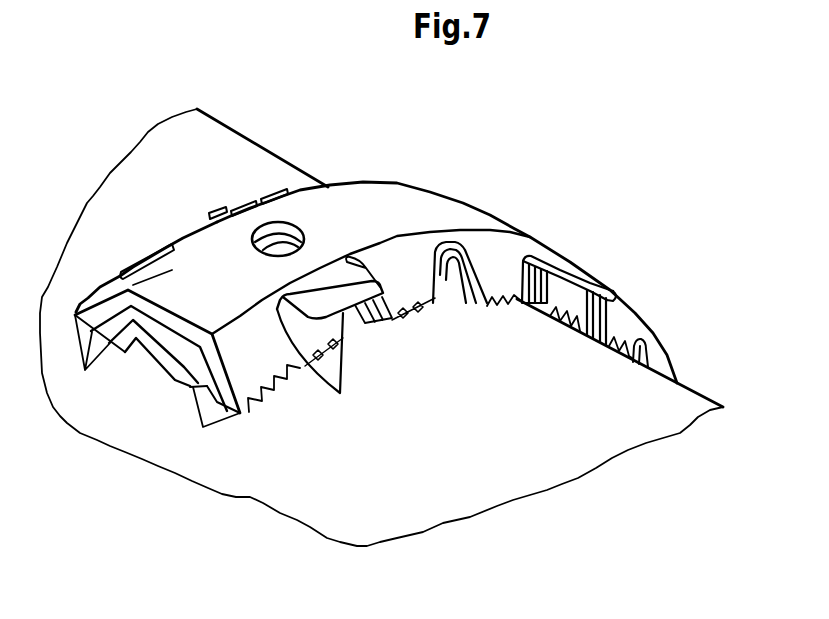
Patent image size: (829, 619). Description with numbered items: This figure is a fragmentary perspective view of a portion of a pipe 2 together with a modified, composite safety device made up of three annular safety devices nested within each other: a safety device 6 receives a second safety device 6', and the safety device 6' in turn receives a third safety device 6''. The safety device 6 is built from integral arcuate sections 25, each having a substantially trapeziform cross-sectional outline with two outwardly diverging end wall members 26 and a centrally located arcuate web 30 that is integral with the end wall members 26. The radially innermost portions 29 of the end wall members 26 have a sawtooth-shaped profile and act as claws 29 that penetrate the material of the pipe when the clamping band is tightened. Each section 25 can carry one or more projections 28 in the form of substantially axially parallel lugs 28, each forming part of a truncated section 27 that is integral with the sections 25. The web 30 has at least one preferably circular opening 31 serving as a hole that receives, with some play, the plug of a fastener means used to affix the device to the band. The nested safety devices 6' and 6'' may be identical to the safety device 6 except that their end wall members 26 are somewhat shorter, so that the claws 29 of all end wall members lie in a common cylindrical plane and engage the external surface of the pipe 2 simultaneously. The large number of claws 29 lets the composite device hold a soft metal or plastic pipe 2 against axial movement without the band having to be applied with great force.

The pipe 2 is at (245, 136).
The safety device 6 is at (447, 244).
The second safety device 6' is at (157, 336).
The third safety device 6'' is at (158, 364).
The arcuate section 25 is at (176, 288).
The end wall member 26 is at (104, 293).
The truncated section 27 is at (207, 247).
The projection (lug) 28 is at (352, 315).
The claw (radially innermost portion of end wall member) 29 is at (217, 384).
The arcuate web 30 is at (435, 208).
The opening (hole) 31 is at (297, 224).